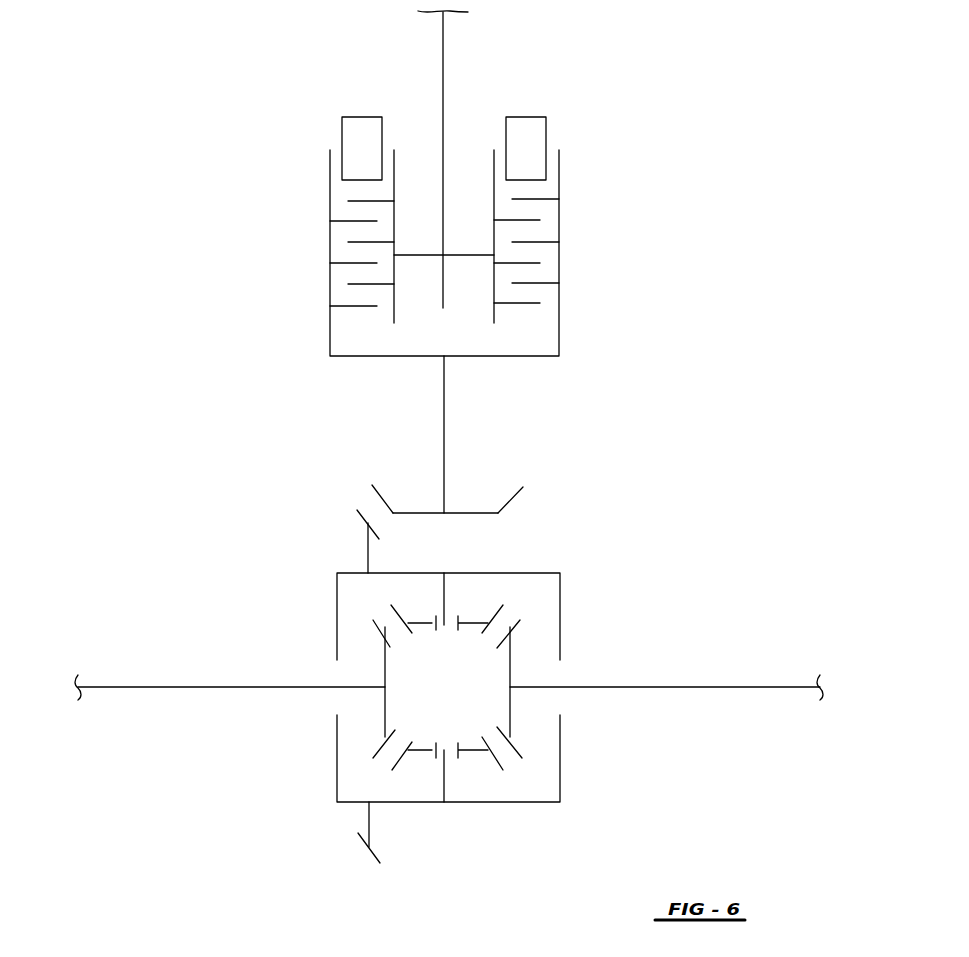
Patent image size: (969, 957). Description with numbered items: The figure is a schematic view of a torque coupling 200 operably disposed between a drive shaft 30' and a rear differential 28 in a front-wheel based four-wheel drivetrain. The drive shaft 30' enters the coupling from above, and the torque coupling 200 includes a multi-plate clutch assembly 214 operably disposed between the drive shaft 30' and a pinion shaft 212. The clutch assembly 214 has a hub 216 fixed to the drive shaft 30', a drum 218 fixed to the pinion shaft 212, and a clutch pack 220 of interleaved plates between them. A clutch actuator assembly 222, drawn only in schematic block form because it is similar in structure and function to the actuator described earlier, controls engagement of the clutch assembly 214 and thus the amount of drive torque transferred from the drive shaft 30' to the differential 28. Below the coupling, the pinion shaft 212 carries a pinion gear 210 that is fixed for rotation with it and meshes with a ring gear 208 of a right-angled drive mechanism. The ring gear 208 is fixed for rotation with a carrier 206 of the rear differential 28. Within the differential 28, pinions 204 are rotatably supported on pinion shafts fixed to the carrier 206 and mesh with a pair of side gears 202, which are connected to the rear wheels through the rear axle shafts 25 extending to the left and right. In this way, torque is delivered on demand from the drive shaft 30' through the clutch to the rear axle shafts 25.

The drive shaft 30' is at (470, 159).
The torque transfer coupling 200 is at (660, 211).
The hub 216 is at (394, 170).
The clutch actuator assembly 222 is at (528, 120).
The clutch pack 220 is at (540, 253).
The drum 218 is at (559, 323).
The multi-plate clutch assembly 214 is at (316, 269).
The pinion shaft 212 is at (444, 421).
The pinion gear 210 is at (508, 502).
The rear differential 28 is at (596, 623).
The side gears 202 is at (380, 662).
The pinions 204 is at (459, 624).
The carrier 206 is at (560, 770).
The ring gear 208 is at (369, 828).
The rear axle shafts 25 is at (206, 687).